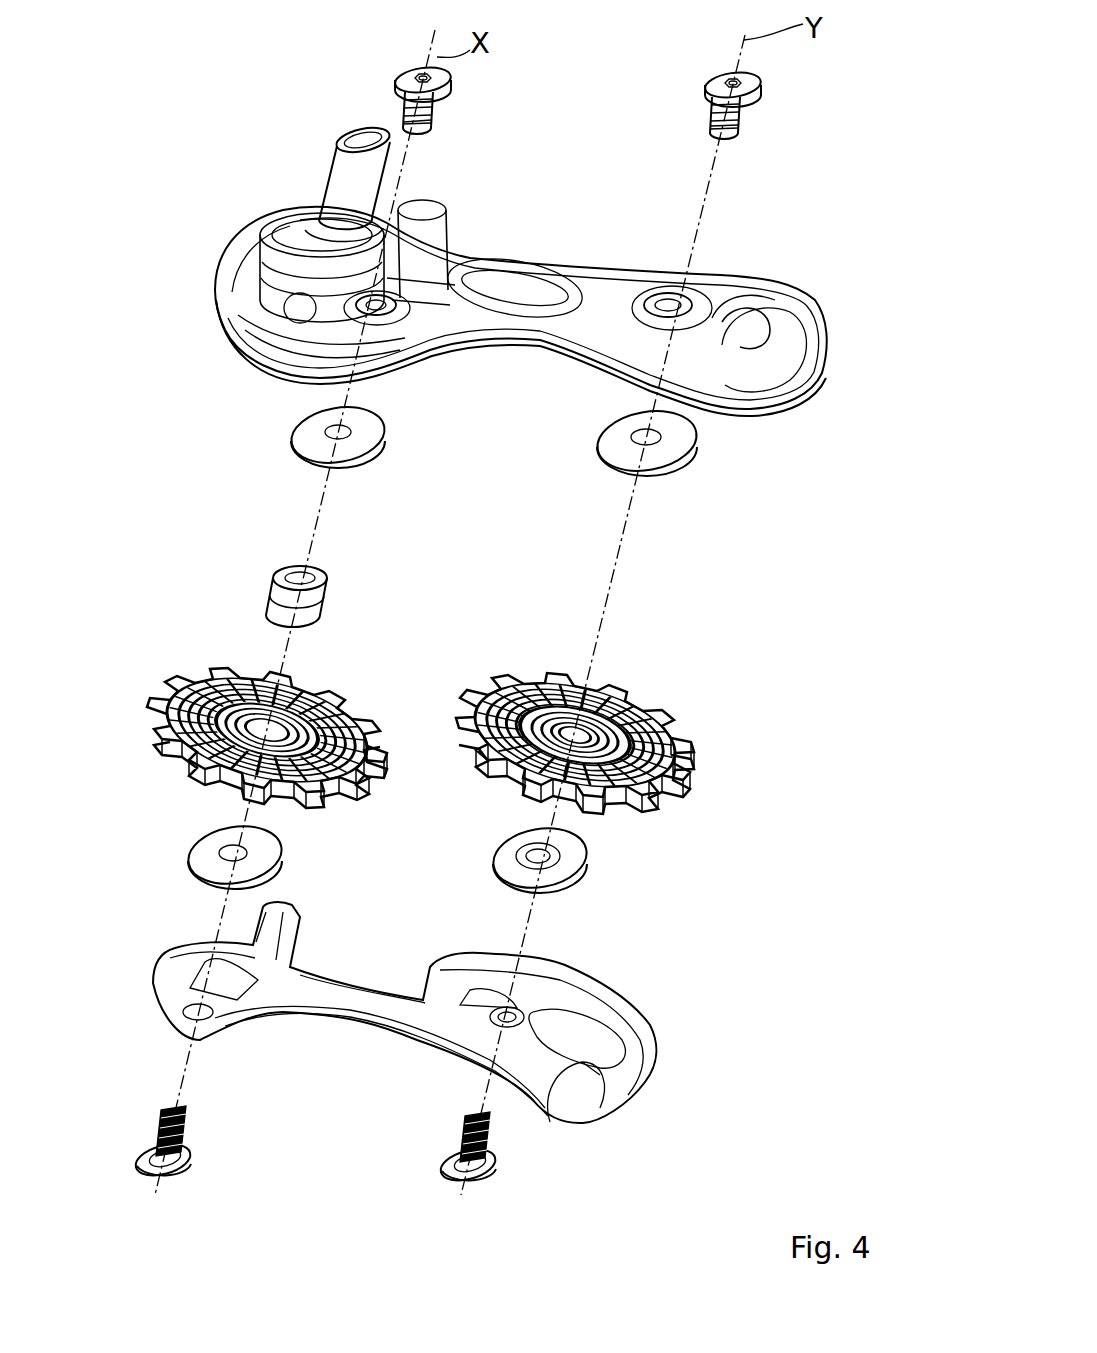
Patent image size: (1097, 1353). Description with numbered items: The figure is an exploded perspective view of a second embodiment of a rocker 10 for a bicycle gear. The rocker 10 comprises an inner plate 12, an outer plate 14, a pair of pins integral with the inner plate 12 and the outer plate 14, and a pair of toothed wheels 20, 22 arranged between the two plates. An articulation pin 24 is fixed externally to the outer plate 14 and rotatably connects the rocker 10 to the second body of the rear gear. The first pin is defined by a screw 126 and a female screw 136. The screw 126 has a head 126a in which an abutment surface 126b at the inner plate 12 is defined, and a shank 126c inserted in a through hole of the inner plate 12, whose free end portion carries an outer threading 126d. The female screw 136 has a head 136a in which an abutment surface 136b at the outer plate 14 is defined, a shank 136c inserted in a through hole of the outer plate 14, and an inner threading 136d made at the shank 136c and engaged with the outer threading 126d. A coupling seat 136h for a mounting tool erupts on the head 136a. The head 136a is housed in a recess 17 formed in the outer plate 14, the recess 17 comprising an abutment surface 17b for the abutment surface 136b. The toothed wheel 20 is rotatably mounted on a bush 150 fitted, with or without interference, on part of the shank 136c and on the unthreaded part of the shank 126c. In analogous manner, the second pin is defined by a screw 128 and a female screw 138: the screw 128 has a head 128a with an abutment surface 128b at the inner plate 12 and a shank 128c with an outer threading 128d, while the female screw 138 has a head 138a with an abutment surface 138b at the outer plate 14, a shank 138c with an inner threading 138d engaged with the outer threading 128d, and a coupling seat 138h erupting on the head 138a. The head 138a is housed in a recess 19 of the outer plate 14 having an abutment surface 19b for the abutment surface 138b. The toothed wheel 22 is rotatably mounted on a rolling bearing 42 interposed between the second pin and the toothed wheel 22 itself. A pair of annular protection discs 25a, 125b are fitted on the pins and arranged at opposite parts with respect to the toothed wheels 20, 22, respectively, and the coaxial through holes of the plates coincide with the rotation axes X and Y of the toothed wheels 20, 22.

The rocker 10 is at (243, 130).
The inner plate 12 is at (680, 1033).
The outer plate 14 is at (835, 315).
The recess 17 is at (378, 293).
The abutment surface 17b is at (390, 307).
The recess 19 is at (651, 302).
The abutment surface 19b is at (702, 304).
The toothed wheel 20 is at (195, 655).
The toothed wheel 22 is at (698, 763).
The articulation pin 24 is at (370, 195).
The annular protection disc 25a is at (315, 427).
The annular protection disc 125b is at (680, 435).
The rolling bearing 42 is at (600, 703).
The bush 150 is at (272, 583).
The screw 126 is at (166, 1196).
The head 126a is at (158, 1172).
The abutment surface 126b is at (170, 1163).
The shank 126c is at (155, 1152).
The outer threading 126d is at (183, 1133).
The screw 128 is at (477, 1186).
The head 128a is at (450, 1168).
The abutment surface 128b is at (488, 1168).
The shank 128c is at (463, 1158).
The outer threading 128d is at (487, 1133).
The female screw 136 is at (465, 68).
The head 136a is at (405, 80).
The abutment surface 136b is at (452, 92).
The shank 136c is at (413, 115).
The inner threading 136d is at (460, 148).
The coupling seat 136h is at (425, 80).
The female screw 138 is at (755, 73).
The head 138a is at (717, 78).
The abutment surface 138b is at (750, 103).
The shank 138c is at (718, 115).
The inner threading 138d is at (720, 130).
The coupling seat 138h is at (734, 84).